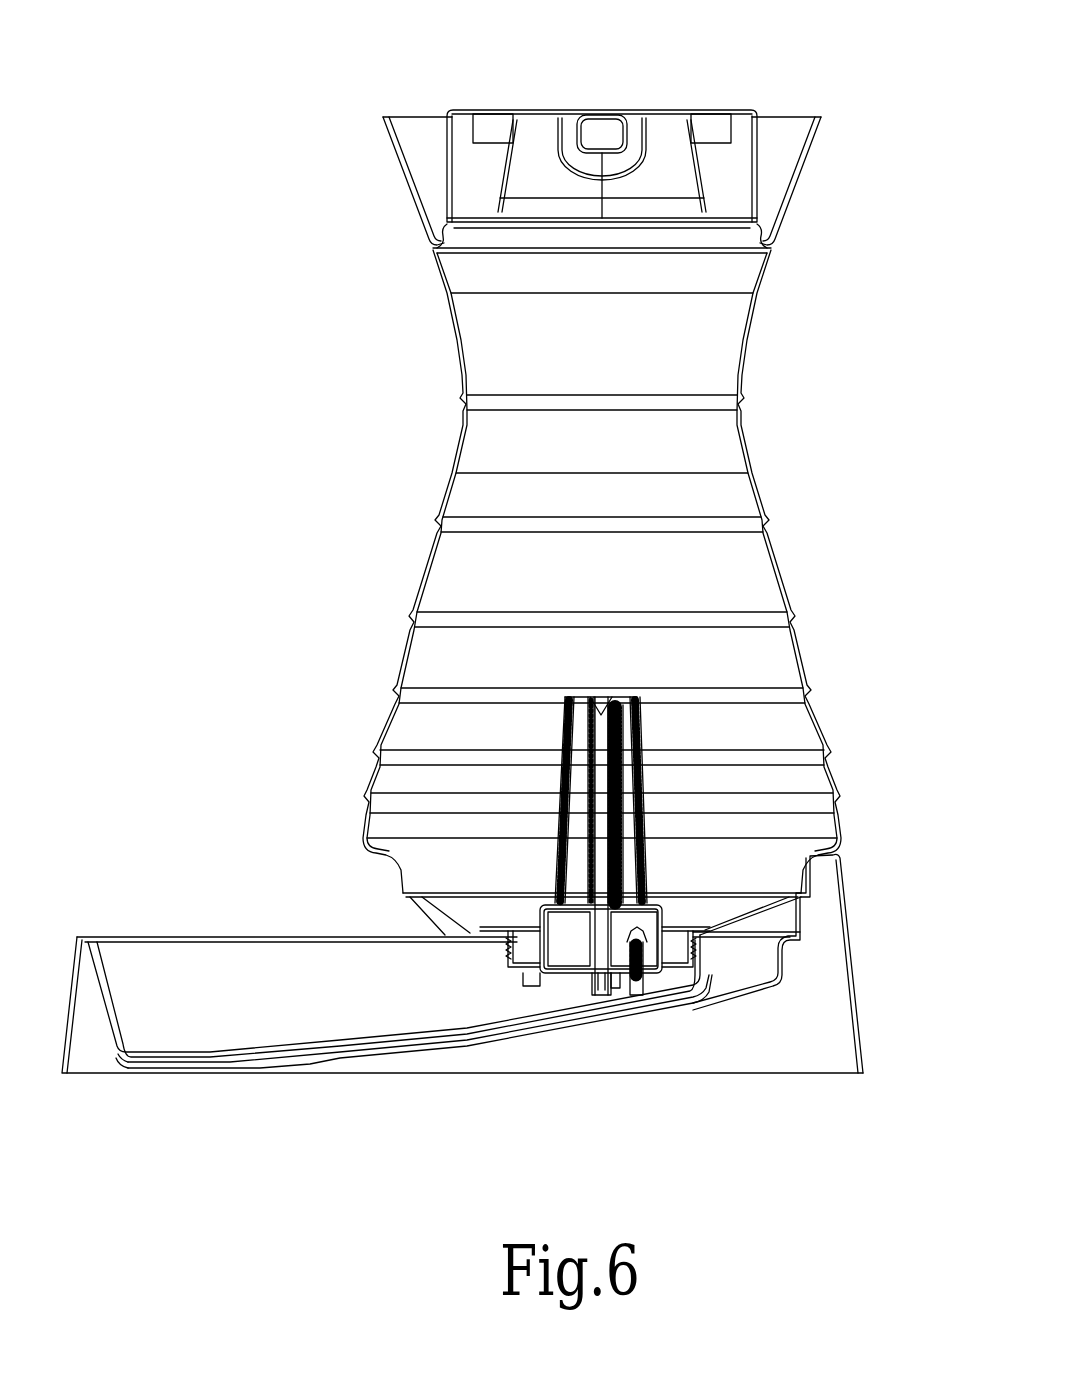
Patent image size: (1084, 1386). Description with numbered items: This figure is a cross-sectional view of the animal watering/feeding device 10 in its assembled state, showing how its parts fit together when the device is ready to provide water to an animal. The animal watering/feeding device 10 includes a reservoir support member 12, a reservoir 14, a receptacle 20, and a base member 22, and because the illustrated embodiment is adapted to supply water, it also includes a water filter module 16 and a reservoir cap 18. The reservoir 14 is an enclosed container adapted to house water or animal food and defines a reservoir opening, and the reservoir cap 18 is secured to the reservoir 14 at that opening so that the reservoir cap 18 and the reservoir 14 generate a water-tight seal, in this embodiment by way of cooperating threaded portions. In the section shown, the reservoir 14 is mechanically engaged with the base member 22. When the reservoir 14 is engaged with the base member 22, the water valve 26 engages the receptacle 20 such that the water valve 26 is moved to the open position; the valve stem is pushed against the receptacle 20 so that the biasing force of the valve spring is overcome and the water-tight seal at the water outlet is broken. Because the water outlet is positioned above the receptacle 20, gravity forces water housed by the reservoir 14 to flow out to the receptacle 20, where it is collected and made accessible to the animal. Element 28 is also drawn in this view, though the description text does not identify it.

The animal watering/feeding device 10 is at (265, 291).
The reservoir support member 12 is at (787, 143).
The reservoir 14 is at (765, 577).
The water filter module 16 is at (617, 782).
The reservoir cap 18 is at (522, 952).
The receptacle 20 is at (402, 1010).
The base member 22 is at (833, 1053).
The water valve 26 is at (640, 975).
The bushing 28 is at (600, 987).